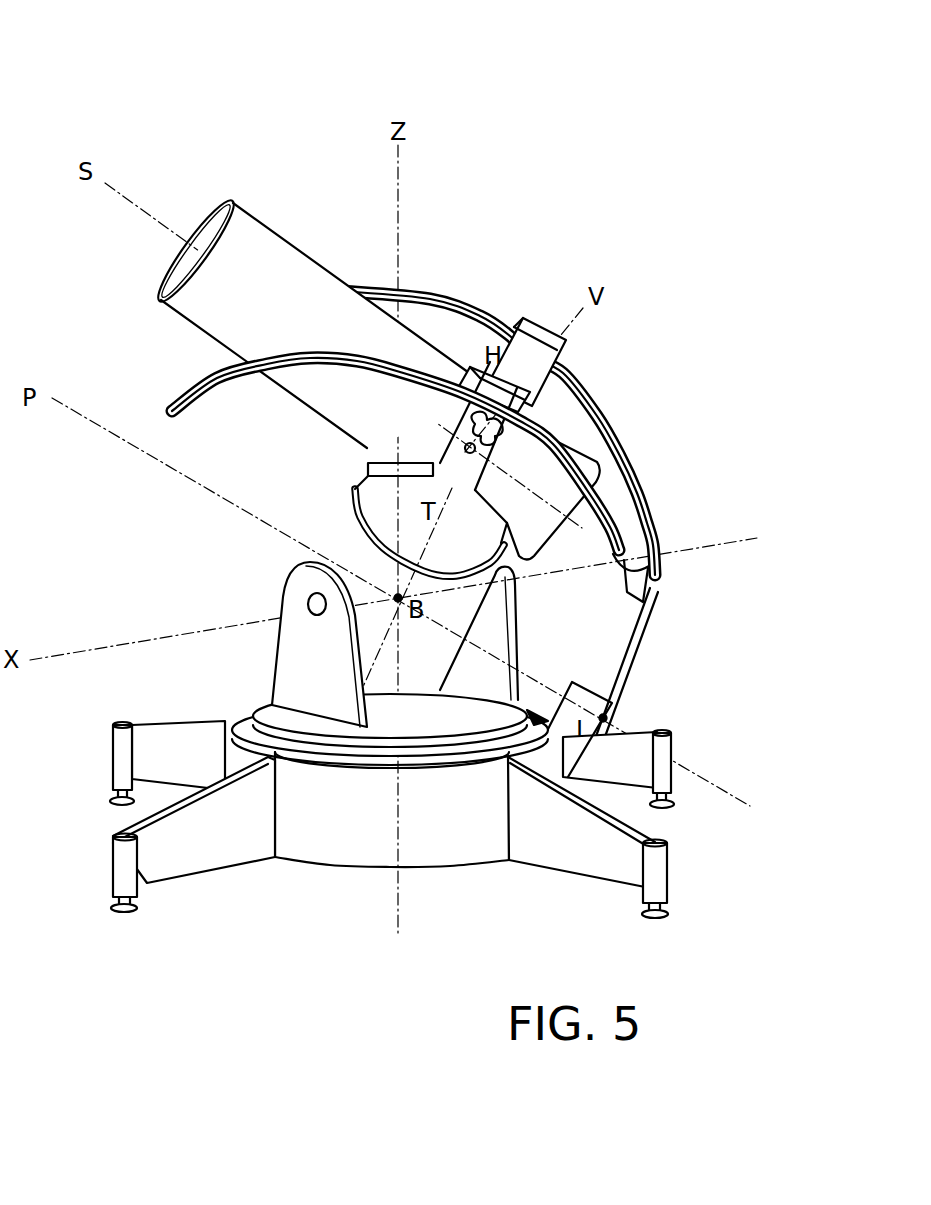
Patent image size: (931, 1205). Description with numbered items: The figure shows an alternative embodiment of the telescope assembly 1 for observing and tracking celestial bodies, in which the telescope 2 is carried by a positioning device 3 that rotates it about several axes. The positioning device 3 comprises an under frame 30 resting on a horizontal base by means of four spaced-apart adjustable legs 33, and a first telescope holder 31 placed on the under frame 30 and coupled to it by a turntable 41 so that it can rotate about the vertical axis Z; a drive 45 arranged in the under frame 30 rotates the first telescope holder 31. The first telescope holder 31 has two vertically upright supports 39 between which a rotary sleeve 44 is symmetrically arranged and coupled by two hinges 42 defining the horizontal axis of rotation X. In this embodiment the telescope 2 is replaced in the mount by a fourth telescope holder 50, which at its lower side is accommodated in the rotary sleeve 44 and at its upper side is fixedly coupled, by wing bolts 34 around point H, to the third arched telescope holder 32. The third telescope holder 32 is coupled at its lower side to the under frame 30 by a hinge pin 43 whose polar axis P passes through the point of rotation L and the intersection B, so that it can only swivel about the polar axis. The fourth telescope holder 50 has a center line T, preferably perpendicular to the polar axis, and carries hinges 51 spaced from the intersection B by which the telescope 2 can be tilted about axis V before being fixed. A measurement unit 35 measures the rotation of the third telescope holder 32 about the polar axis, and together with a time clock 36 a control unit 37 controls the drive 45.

The telescope assembly 1 is at (122, 115).
The telescope 2 is at (658, 285).
The positioning device 3 is at (295, 910).
The under frame 30 is at (450, 838).
The first telescope holder 31 is at (503, 708).
The third arched telescope holder 32 is at (637, 484).
The adjustable legs 33 is at (157, 767).
The wing bolts 34 is at (466, 447).
The measurement unit 35 is at (606, 716).
The time clock 36 is at (624, 670).
The control unit 37 is at (624, 670).
The supports 39 is at (292, 587).
The turntable 41 is at (249, 720).
The hinges 42 is at (306, 606).
The hinge pin 43 is at (569, 665).
The rotary sleeve 44 is at (465, 607).
The drive 45 is at (353, 850).
The fourth telescope holder 50 is at (385, 491).
The hinges 51 is at (556, 400).